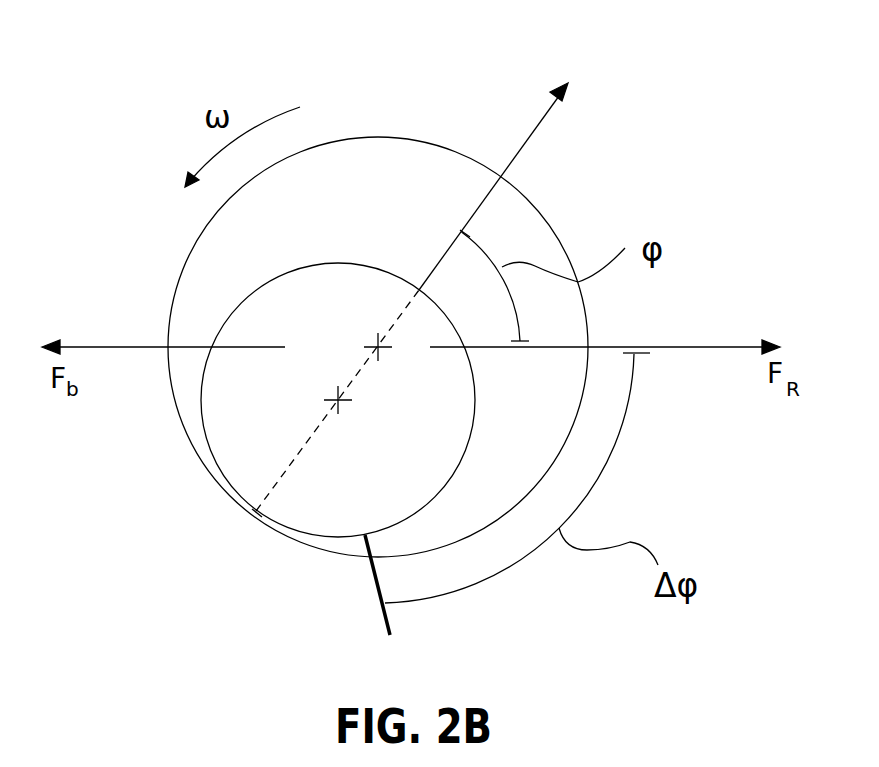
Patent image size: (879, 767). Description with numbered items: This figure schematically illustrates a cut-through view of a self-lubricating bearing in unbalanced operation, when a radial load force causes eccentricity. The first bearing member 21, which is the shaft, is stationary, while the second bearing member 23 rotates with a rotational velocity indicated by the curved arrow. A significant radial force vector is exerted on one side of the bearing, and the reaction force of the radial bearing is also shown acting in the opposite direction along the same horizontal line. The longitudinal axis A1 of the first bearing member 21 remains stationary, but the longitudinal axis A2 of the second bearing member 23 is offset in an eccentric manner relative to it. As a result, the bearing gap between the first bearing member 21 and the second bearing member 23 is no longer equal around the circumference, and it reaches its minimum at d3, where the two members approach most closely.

The first bearing member 21 is at (315, 263).
The second bearing member 23 is at (433, 140).
The longitudinal axis of the first bearing member A1 is at (393, 362).
The longitudinal axis of the second bearing member A2 is at (347, 422).
The minimum bearing gap d3 is at (257, 518).